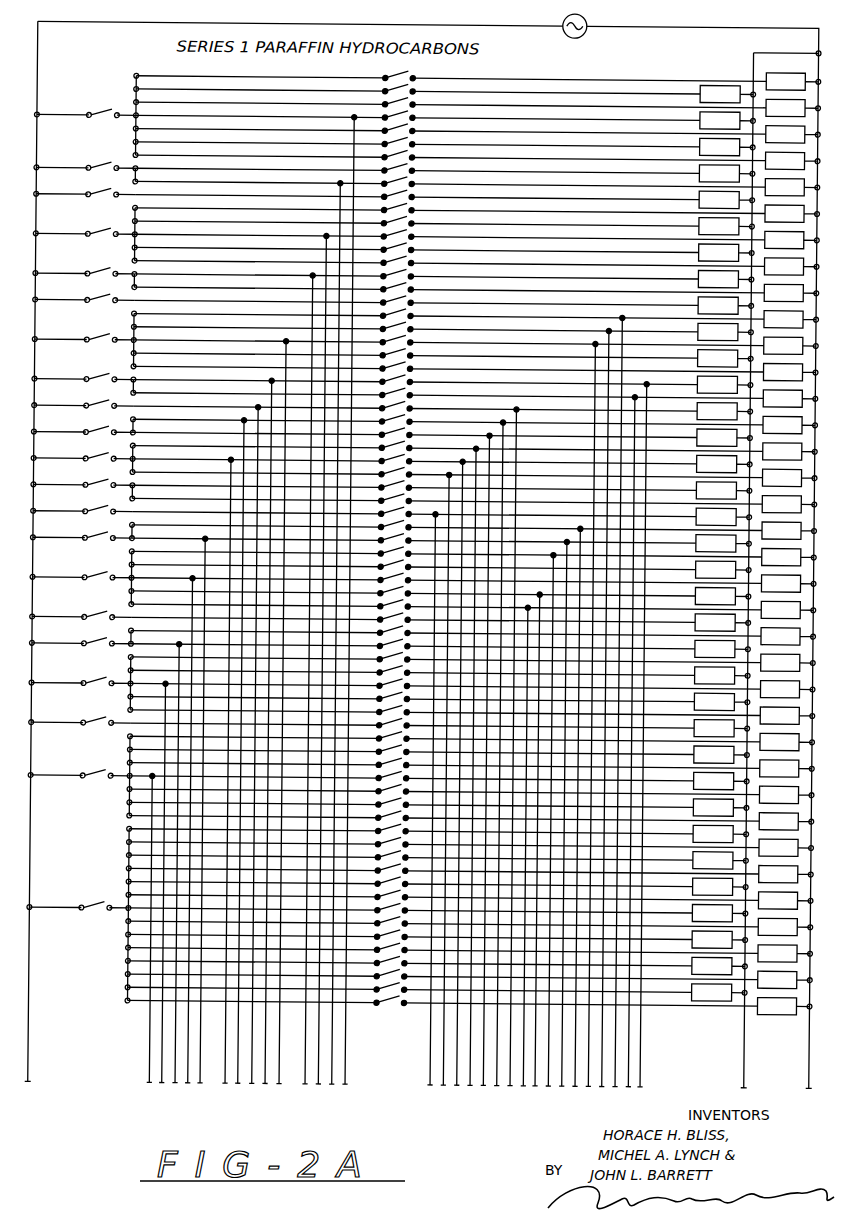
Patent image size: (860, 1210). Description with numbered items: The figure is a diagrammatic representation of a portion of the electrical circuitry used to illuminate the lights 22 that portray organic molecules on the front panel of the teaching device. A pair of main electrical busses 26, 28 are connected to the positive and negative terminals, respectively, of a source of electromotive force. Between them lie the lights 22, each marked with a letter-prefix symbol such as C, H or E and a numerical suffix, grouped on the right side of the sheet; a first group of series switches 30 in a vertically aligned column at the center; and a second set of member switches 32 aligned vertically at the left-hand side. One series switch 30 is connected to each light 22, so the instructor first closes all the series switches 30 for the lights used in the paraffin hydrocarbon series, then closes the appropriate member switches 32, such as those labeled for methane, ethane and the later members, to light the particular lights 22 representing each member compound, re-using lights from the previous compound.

The lights 22 is at (726, 80).
The main electrical bus 26 is at (819, 44).
The main electrical bus 28 is at (40, 48).
The series switches 30 is at (400, 67).
The member switches 32 is at (104, 101).